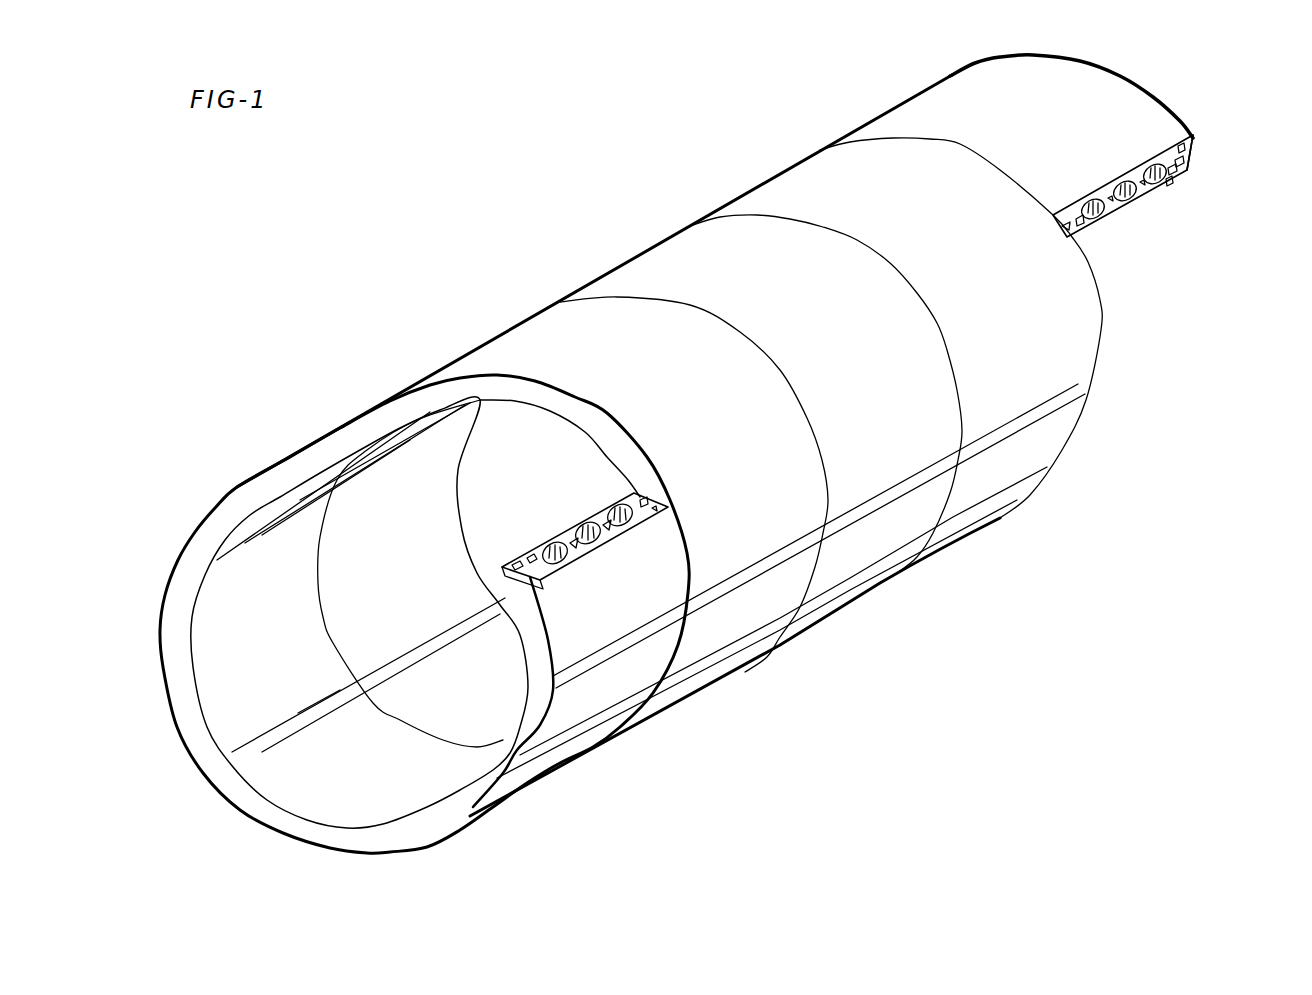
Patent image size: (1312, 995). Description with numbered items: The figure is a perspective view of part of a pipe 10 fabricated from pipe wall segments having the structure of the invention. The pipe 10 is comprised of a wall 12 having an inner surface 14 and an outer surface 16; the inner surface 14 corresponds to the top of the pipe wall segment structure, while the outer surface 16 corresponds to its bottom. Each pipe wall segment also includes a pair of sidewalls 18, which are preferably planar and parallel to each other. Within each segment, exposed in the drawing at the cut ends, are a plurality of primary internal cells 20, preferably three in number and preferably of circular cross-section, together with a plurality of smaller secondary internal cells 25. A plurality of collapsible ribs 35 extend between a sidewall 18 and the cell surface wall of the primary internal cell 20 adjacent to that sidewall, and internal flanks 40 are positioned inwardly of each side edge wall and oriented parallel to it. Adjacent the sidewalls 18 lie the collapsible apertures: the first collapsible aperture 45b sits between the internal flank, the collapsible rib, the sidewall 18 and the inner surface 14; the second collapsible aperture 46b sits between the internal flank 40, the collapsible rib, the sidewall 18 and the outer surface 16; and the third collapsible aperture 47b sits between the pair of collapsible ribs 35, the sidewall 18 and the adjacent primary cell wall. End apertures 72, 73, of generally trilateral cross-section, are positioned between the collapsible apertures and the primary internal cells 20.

The pipe 10 is at (603, 263).
The wall 12 is at (685, 222).
The inner surface 14 is at (235, 697).
The outer surface 16 is at (512, 352).
The sidewalls 18 is at (503, 770).
The primary internal cells 20 is at (853, 385).
The secondary internal cells 25 is at (1110, 207).
The collapsible ribs 35 is at (480, 575).
The internal flanks 40 is at (545, 578).
The end aperture 72 is at (1193, 137).
The first collapsible aperture 45b is at (1190, 145).
The second collapsible aperture 46b is at (1183, 173).
The third collapsible aperture 47b is at (1190, 167).
The end aperture 73 is at (1173, 177).